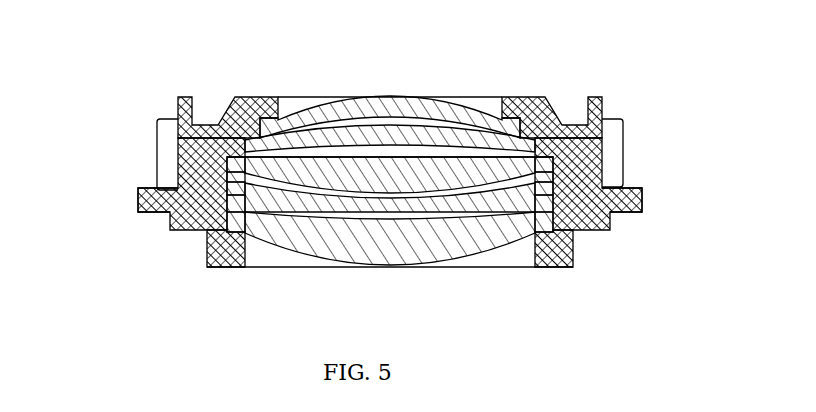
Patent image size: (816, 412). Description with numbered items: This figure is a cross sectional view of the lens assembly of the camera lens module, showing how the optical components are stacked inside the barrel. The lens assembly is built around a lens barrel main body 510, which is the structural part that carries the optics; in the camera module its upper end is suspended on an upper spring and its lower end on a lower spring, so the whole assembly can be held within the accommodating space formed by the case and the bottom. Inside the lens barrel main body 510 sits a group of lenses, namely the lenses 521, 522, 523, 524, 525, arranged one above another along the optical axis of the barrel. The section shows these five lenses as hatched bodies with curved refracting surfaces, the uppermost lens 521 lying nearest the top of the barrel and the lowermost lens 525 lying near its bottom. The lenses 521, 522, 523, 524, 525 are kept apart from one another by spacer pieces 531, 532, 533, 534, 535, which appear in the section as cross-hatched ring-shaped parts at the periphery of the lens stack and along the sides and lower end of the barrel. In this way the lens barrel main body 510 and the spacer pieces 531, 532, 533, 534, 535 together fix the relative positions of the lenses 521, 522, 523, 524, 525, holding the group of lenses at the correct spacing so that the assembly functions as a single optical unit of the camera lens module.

The lens barrel main body 510 is at (260, 96).
The lens 521 is at (449, 96).
The lens 522 is at (605, 135).
The lens 523 is at (605, 168).
The lens 524 is at (645, 205).
The lens 525 is at (508, 243).
The spacer piece 531 is at (200, 133).
The spacer piece 532 is at (215, 158).
The spacer piece 533 is at (172, 176).
The spacer piece 534 is at (197, 232).
The spacer piece 535 is at (258, 267).